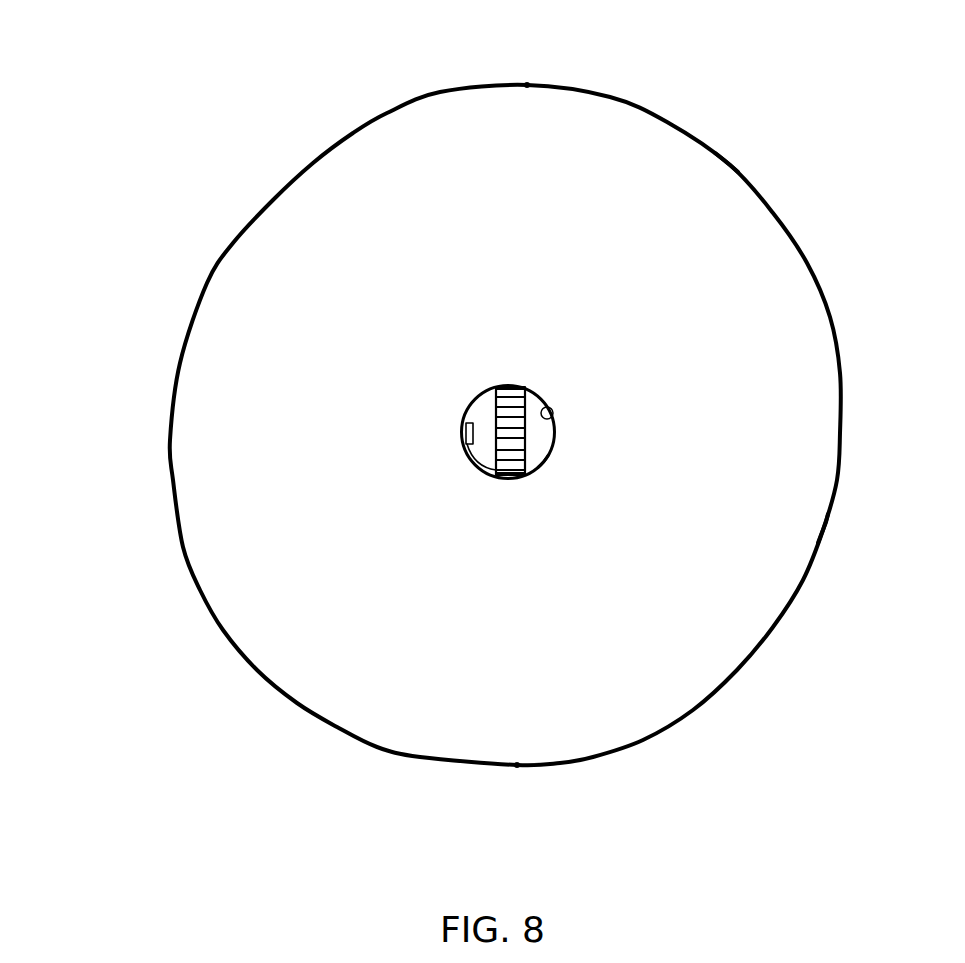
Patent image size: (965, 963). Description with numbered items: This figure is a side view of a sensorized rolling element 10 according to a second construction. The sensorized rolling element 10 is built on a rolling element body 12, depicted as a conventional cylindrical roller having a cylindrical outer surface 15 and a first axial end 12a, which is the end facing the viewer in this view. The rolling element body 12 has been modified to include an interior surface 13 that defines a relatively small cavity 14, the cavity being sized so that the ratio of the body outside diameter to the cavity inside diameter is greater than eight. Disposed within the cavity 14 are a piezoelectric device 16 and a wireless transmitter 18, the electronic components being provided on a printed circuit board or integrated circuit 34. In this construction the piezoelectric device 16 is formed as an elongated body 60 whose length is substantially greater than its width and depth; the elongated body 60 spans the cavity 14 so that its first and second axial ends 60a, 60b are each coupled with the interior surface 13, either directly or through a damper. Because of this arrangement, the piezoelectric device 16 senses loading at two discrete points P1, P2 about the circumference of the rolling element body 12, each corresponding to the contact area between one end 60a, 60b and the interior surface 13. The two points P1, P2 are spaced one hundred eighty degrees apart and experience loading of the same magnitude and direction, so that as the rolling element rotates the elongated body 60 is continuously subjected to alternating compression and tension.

The sensorized rolling element 10 is at (192, 94).
The rolling element body 12 is at (849, 347).
The first axial end 12a is at (797, 512).
The cylindrical outer surface 15 is at (728, 162).
The first discrete loading point P1 is at (527, 85).
The second discrete loading point P2 is at (517, 765).
The cavity 14 is at (542, 437).
The piezoelectric device 16 is at (545, 460).
The interior surface 13 is at (556, 418).
The elongated body 60 is at (489, 452).
The first axial end of elongated body 60a is at (507, 393).
The second axial end of elongated body 60b is at (512, 475).
The printed circuit board or integrated circuit 34 is at (460, 425).
The wireless transmitter 18 is at (470, 433).